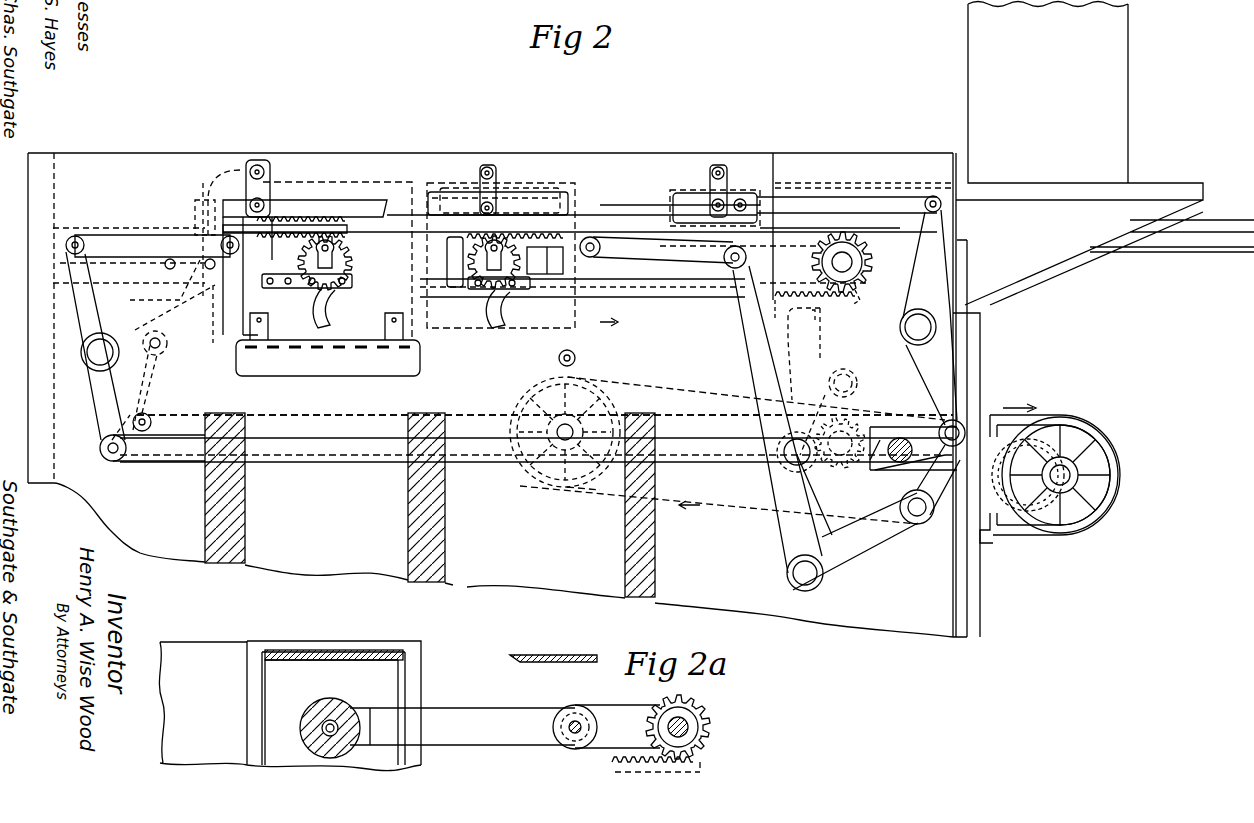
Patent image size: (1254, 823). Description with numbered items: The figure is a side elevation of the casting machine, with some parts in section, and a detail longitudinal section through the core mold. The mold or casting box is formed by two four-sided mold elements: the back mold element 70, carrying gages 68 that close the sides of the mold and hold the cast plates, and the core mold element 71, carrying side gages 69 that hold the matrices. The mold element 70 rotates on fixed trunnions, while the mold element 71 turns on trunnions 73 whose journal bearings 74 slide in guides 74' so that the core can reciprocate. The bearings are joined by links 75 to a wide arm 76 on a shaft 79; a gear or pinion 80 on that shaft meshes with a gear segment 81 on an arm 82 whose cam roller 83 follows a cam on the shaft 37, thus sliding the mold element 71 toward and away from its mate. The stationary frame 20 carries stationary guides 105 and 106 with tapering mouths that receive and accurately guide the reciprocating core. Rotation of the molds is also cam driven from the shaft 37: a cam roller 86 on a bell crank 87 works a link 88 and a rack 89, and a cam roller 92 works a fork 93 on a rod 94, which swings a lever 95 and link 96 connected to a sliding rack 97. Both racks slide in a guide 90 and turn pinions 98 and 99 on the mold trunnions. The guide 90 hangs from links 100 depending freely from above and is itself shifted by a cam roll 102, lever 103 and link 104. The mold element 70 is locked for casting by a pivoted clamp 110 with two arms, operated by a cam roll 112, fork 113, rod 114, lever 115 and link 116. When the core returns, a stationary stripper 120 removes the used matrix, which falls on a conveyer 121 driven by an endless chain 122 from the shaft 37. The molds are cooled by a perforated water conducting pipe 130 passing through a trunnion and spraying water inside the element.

In FIG. 2, the stationary frame 20 is at (135, 156).
In FIG. 2, the shaft 37 is at (897, 425).
In FIG. 2, the gages 68 is at (410, 182).
In FIG. 2A, the gages 68 is at (235, 641).
In FIG. 2, the side gages 69 is at (565, 182).
In FIG. 2A, the side gages 69 is at (330, 641).
In FIG. 2, the mold element 70 is at (325, 182).
In FIG. 2A, the mold element 70 is at (203, 703).
In FIG. 2, the mold element 71 is at (498, 185).
In FIG. 2A, the mold element 71 is at (282, 749).
In FIG. 2A, the trunnions 73 is at (302, 715).
In FIG. 2, the journal bearings 74 is at (500, 255).
In FIG. 2, the guides 74' is at (677, 344).
In FIG. 2, the links 75 is at (628, 282).
In FIG. 2A, the links 75 is at (462, 726).
In FIG. 2, the wide arm 76 is at (788, 252).
In FIG. 2A, the wide arm 76 is at (606, 727).
In FIG. 2, the shaft 79 is at (852, 262).
In FIG. 2A, the shaft 79 is at (690, 727).
In FIG. 2, the gear or pinion 80 is at (866, 246).
In FIG. 2A, the gear or pinion 80 is at (700, 707).
In FIG. 2, the gear segment 81 is at (852, 306).
In FIG. 2A, the gear segment 81 is at (700, 766).
In FIG. 2, the arm 82 is at (812, 355).
In FIG. 2, the cam roller 83 is at (856, 373).
In FIG. 2, the cam roller 86 is at (922, 525).
In FIG. 2, the bell crank 87 is at (785, 550).
In FIG. 2, the link 88 is at (695, 258).
In FIG. 2, the rack 89 is at (547, 247).
In FIG. 2, the guide 90 is at (625, 222).
In FIG. 2, the cam roller 92 is at (820, 466).
In FIG. 2, the fork 93 is at (873, 458).
In FIG. 2, the rod 94 is at (305, 463).
In FIG. 2, the lever 95 is at (105, 430).
In FIG. 2, the link 96 is at (142, 250).
In FIG. 2, the sliding rack 97 is at (348, 237).
In FIG. 2, the pinion 98 is at (465, 300).
In FIG. 2, the pinion 99 is at (355, 275).
In FIG. 2, the links 100 is at (266, 180).
In FIG. 2, the cam roll 102 is at (985, 412).
In FIG. 2, the lever 103 is at (916, 286).
In FIG. 2, the link 104 is at (843, 200).
In FIG. 2, the stationary guide 105 is at (690, 192).
In FIG. 2A, the stationary guide 105 is at (552, 660).
In FIG. 2, the stationary guide 106 is at (560, 188).
In FIG. 2A, the stationary guide 106 is at (365, 652).
In FIG. 2, the pivoted clamp 110 is at (175, 274).
In FIG. 2, the cam roll 112 is at (792, 466).
In FIG. 2, the fork 113 is at (762, 462).
In FIG. 2, the rod 114 is at (300, 416).
In FIG. 2, the lever 115 is at (160, 386).
In FIG. 2, the link 116 is at (205, 212).
In FIG. 2, the stripper 120 is at (578, 358).
In FIG. 2, the conveyer 121 is at (605, 488).
In FIG. 2, the endless chain 122 is at (1010, 440).
In FIG. 2A, the water conducting pipe 130 is at (340, 708).